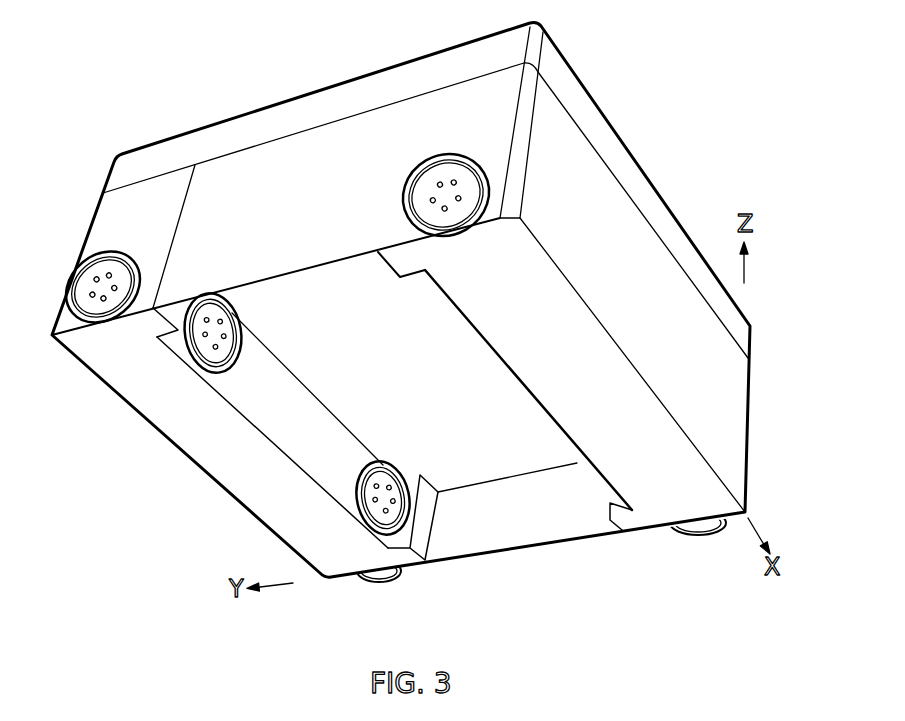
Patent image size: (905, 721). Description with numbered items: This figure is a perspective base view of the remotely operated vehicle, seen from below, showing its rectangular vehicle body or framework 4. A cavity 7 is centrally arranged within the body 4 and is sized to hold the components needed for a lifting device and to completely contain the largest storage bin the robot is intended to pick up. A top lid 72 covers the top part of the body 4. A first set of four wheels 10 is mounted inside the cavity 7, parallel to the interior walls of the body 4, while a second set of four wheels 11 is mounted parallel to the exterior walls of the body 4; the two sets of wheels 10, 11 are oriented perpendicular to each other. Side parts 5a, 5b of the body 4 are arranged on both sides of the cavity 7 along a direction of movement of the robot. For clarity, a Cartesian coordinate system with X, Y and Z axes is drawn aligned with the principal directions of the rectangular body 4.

The vehicle body 4 is at (137, 556).
The side part 5a is at (175, 450).
The side part 5b is at (600, 197).
The top lid 72 is at (598, 110).
The cavity 7 is at (398, 390).
The first set of four wheels 10 is at (218, 312).
The second set of four wheels 11 is at (440, 182).